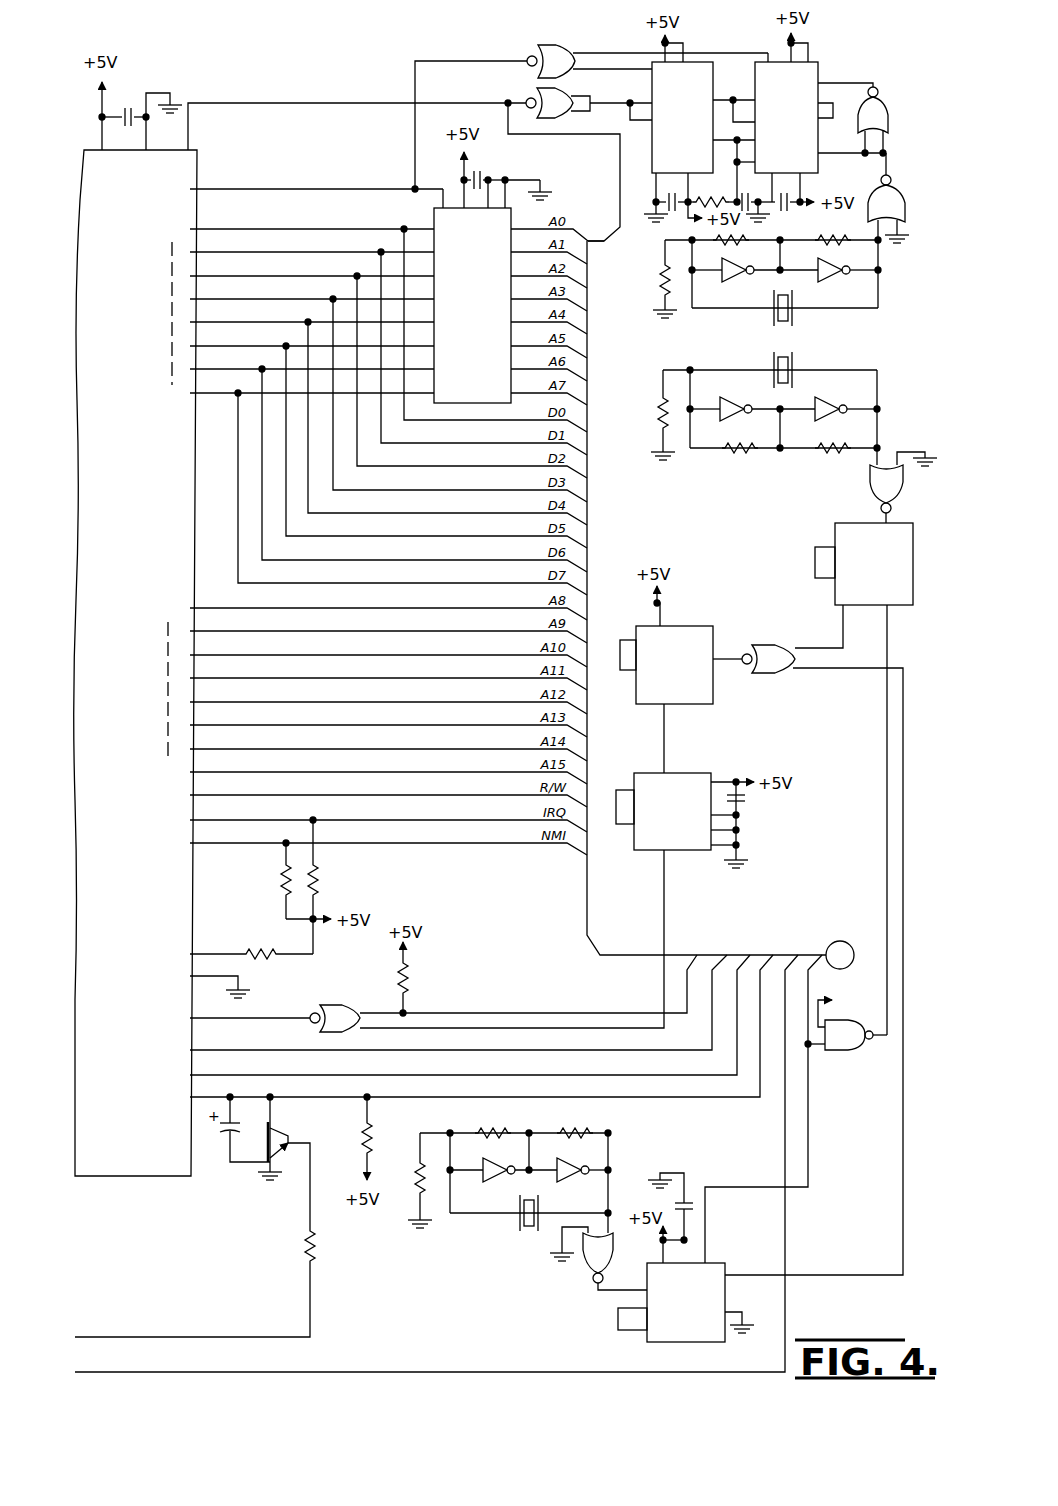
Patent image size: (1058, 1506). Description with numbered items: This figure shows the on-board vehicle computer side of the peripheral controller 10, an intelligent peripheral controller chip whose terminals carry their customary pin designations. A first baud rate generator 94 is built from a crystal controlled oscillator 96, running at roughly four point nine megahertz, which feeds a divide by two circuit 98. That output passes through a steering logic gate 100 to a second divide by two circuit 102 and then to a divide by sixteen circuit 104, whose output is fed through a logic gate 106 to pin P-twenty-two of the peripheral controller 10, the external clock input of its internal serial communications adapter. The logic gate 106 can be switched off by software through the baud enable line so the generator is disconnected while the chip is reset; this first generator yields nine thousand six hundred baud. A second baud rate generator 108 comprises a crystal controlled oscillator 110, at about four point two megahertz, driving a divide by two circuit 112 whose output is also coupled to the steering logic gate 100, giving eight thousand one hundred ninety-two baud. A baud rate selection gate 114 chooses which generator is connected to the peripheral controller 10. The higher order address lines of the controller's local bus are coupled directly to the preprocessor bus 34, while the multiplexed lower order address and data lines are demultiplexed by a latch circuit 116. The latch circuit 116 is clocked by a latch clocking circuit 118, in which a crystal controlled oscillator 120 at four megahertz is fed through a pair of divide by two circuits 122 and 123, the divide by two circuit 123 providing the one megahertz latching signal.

The peripheral controller 10 is at (124, 563).
The preprocessor bus 34 is at (588, 894).
The first baud rate generator 94 is at (804, 446).
The crystal controlled oscillator 96 is at (826, 366).
The divide by two circuit 98 is at (882, 576).
The steering logic gate 100 is at (774, 654).
The second divide by two circuit 102 is at (690, 675).
The divide by sixteen circuit 104 is at (688, 821).
The logic gate 106 is at (345, 1008).
The second baud rate generator 108 is at (552, 1268).
The crystal controlled oscillator 110 is at (629, 1146).
The divide by two circuit 112 is at (700, 1312).
The baud rate selection gate 114 is at (858, 1052).
The latch circuit 116 is at (490, 304).
The latch clocking circuit 118 is at (860, 70).
The crystal controlled oscillator 120 is at (808, 303).
The divide by two circuit 122 is at (699, 125).
The divide by two circuit 123 is at (803, 125).